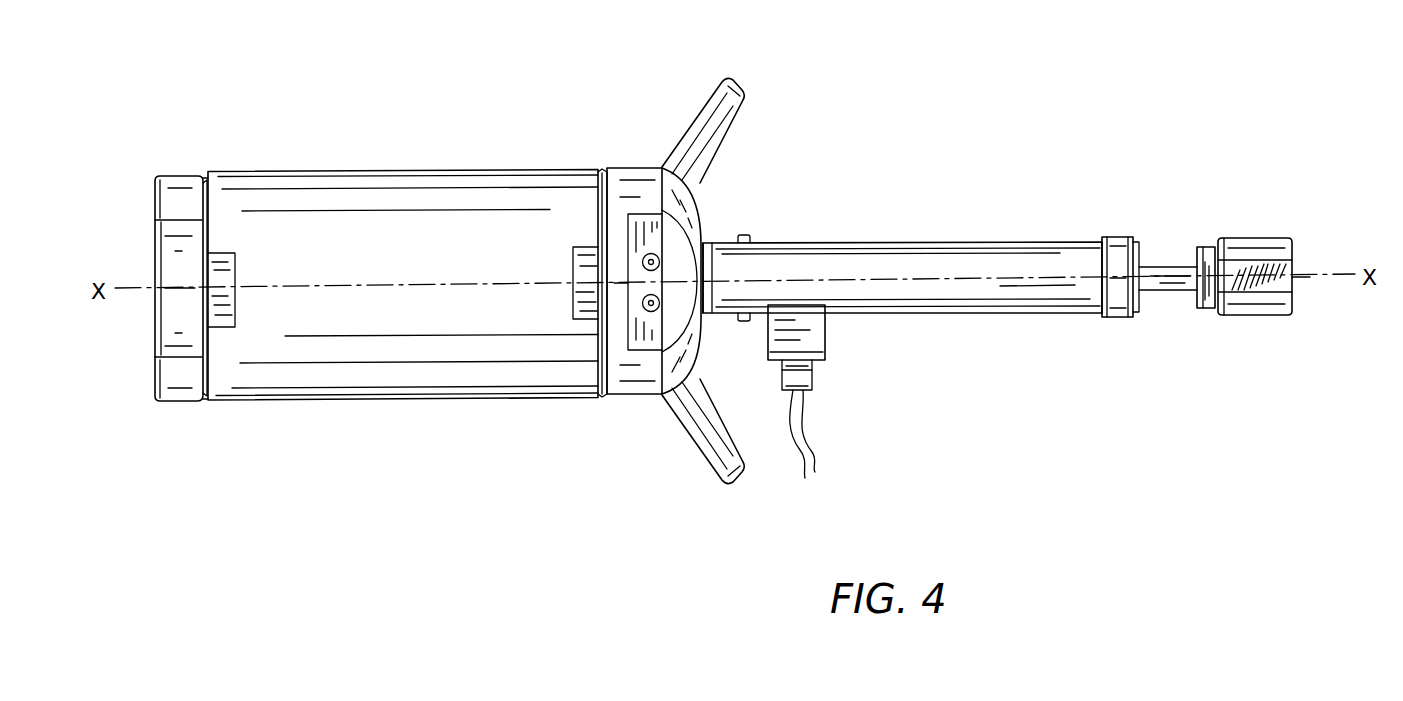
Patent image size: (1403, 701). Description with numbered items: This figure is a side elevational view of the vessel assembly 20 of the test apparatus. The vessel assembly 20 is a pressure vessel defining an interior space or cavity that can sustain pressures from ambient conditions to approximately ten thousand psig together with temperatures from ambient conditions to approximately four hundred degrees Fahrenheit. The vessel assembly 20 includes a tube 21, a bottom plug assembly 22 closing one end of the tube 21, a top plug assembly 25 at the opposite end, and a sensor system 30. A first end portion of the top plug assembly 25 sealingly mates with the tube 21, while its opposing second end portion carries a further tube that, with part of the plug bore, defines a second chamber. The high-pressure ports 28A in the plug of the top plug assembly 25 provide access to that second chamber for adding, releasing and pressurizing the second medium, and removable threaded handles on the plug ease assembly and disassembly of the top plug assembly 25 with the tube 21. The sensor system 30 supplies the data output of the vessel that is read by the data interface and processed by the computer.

The vessel assembly 20 is at (342, 111).
The tube 21 is at (493, 197).
The bottom plug assembly 22 is at (180, 200).
The top plug assembly 25 is at (1305, 62).
The high-pressure ports 28A is at (659, 259).
The sensor system 30 is at (845, 338).